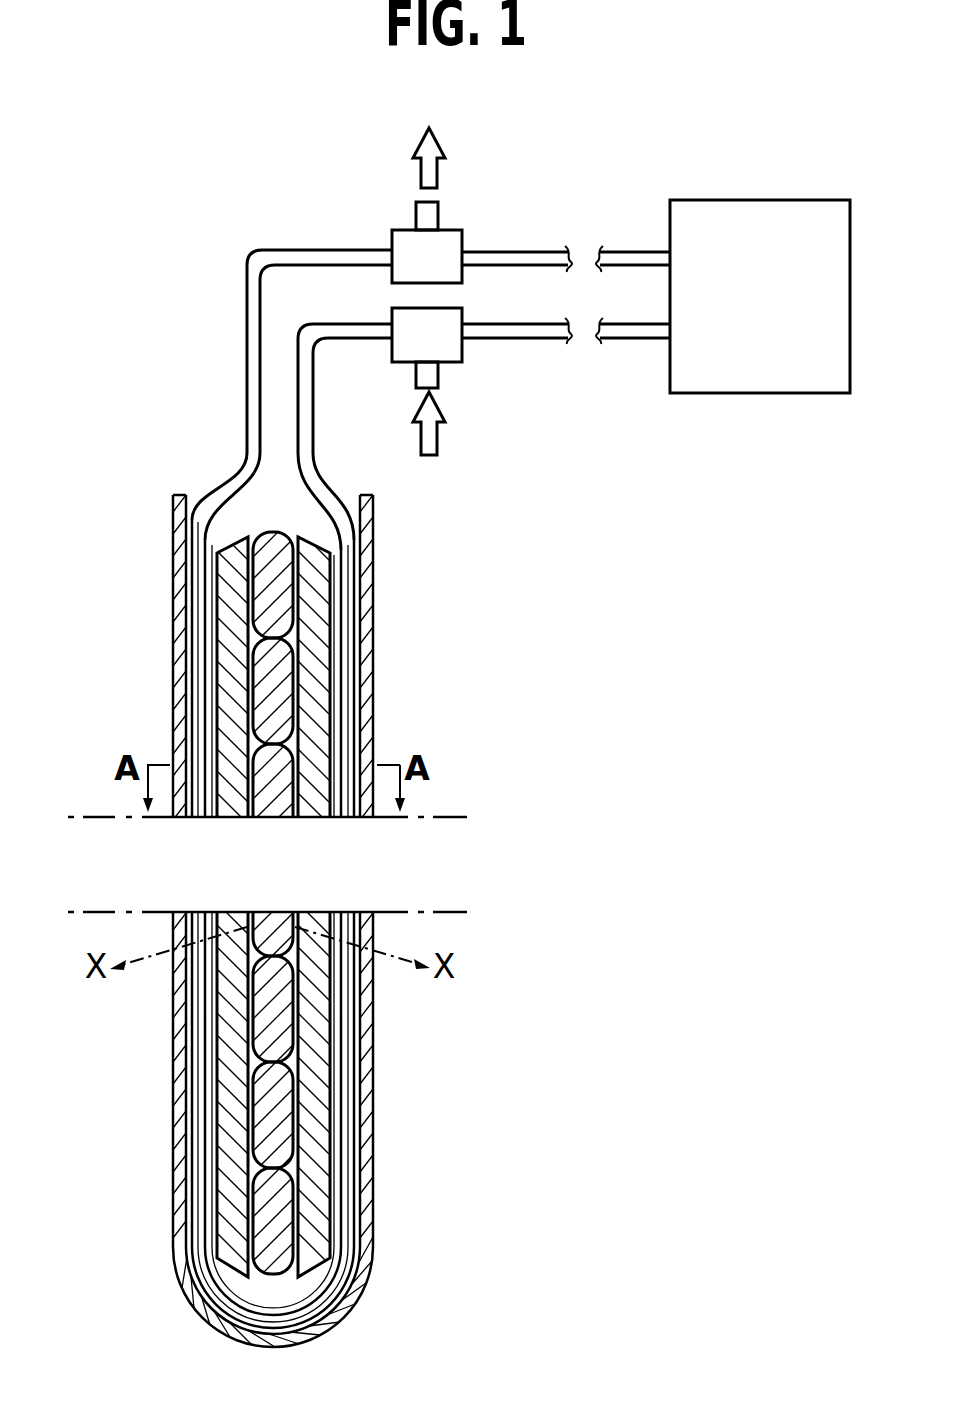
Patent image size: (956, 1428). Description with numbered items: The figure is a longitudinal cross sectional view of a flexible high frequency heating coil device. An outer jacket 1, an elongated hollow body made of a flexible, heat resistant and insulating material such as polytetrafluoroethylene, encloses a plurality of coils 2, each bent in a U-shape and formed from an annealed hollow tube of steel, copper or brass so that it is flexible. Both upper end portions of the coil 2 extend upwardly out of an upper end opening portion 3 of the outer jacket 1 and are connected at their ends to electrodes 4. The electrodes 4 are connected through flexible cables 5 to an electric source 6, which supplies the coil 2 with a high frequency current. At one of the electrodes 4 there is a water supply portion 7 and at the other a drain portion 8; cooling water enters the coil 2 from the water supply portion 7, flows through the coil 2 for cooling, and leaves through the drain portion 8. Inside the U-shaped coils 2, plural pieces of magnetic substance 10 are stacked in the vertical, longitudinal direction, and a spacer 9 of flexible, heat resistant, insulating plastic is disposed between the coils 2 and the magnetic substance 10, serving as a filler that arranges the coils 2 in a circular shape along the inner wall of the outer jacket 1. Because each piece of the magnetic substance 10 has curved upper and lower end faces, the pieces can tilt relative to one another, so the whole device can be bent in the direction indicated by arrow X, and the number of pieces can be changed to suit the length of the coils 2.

The outer jacket 1 is at (373, 575).
The coil 2 is at (247, 365).
The upper end opening portion 3 is at (208, 465).
The electrodes 4 is at (455, 230).
The flexible cables 5 is at (632, 250).
The electric source 6 is at (810, 200).
The water supply portion 7 is at (416, 390).
The drain portion 8 is at (417, 207).
The spacer 9 is at (333, 640).
The magnetic substance 10 is at (290, 535).